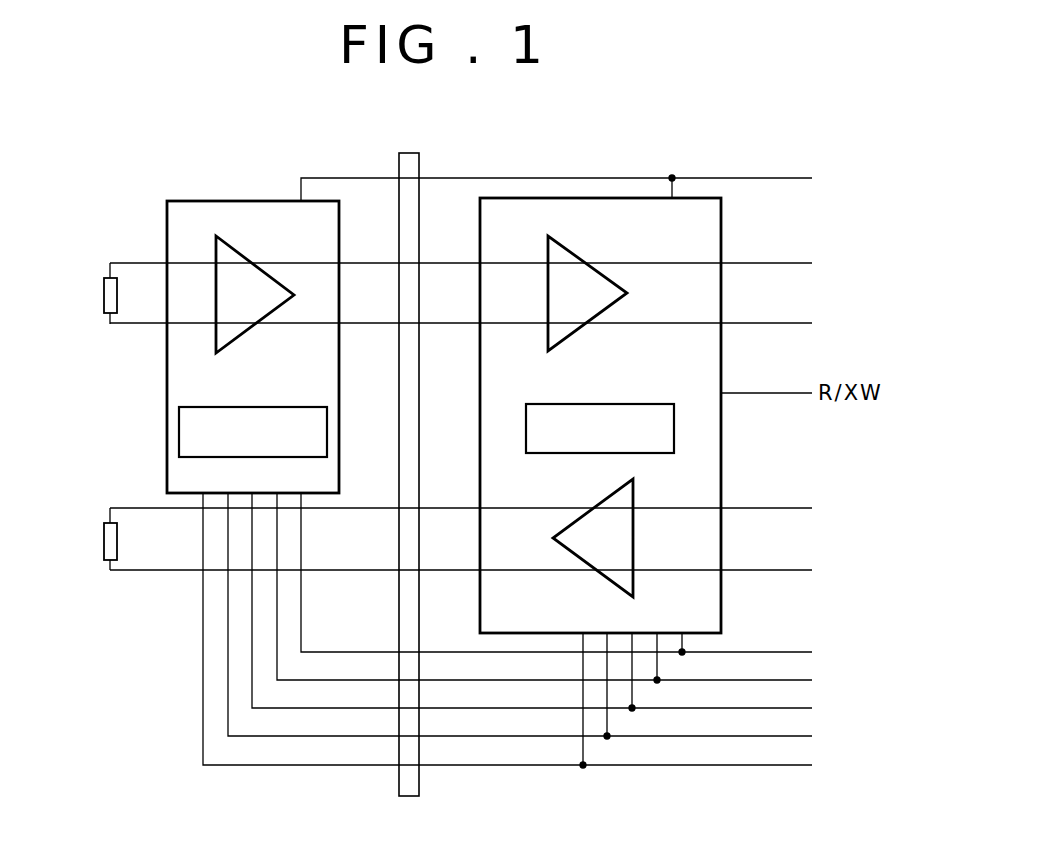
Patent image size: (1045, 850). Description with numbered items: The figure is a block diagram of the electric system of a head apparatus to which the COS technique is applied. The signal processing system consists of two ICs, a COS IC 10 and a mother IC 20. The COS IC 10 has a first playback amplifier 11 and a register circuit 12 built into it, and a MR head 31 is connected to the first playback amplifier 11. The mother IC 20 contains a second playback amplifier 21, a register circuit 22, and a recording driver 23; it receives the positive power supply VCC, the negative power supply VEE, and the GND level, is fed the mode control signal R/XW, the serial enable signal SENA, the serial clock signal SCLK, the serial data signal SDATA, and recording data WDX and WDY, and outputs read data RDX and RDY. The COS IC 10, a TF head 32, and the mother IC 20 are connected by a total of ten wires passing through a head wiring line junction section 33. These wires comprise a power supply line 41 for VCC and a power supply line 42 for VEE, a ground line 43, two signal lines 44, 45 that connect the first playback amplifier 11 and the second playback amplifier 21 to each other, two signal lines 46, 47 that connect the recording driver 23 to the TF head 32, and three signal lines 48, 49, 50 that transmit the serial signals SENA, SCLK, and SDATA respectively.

The COS IC 10 is at (215, 201).
The first playback amplifier 11 is at (248, 257).
The register circuit 12 is at (255, 407).
The mother IC 20 is at (534, 198).
The second playback amplifier 21 is at (579, 256).
The register circuit 22 is at (603, 404).
The recording driver 23 is at (597, 504).
The MR head 31 is at (104, 296).
The TF head 32 is at (104, 544).
The head wiring line junction section 33 is at (420, 786).
The power supply line 41 is at (450, 180).
The power supply line 42 is at (710, 767).
The ground line 43 is at (781, 738).
The signal line 44 is at (450, 265).
The signal line 45 is at (450, 325).
The signal line 46 is at (447, 510).
The signal line 47 is at (447, 572).
The signal line 48 is at (589, 653).
The signal line 49 is at (345, 713).
The signal line 50 is at (303, 783).